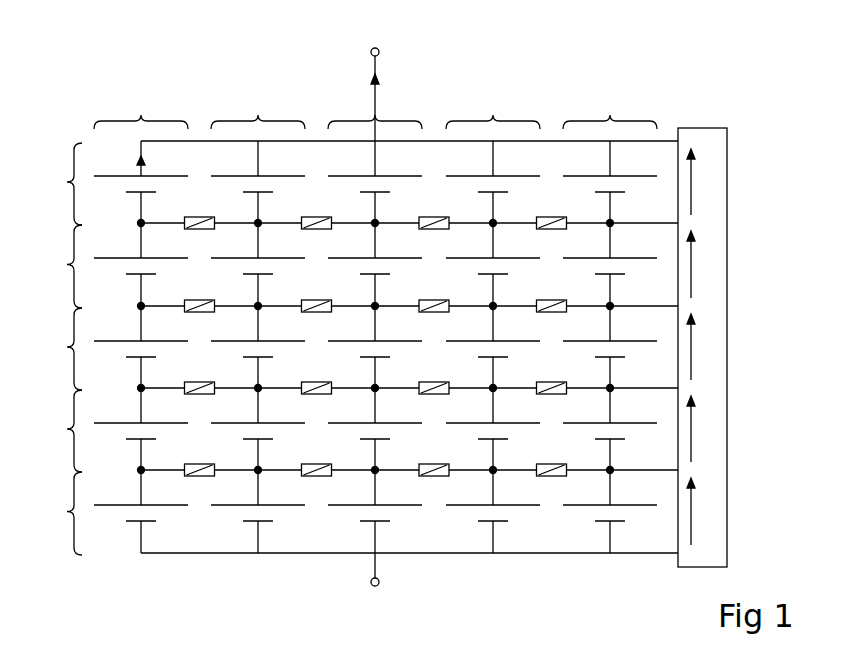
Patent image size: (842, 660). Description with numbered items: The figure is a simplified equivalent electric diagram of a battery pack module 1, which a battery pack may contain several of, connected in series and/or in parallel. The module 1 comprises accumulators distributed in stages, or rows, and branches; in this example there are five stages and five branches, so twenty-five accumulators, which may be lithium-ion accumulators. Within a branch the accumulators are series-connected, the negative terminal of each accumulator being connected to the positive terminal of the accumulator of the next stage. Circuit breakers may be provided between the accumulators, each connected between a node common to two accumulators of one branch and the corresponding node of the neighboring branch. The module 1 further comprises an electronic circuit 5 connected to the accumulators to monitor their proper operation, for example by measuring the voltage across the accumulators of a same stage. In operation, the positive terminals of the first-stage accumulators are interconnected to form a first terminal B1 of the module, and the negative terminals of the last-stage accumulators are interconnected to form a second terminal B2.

The battery pack module 1 is at (446, 68).
The electronic circuit 5 is at (707, 128).
The first terminal B1 is at (361, 87).
The second terminal B2 is at (362, 582).